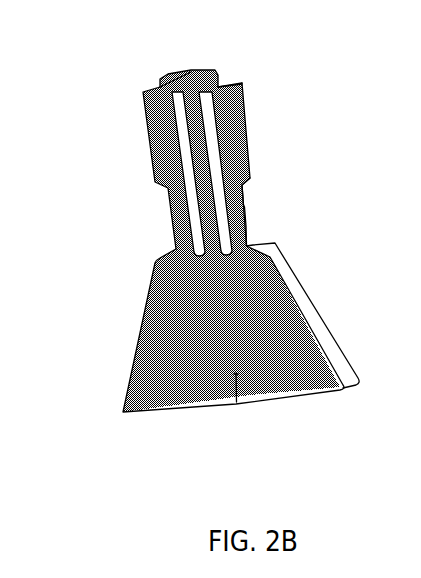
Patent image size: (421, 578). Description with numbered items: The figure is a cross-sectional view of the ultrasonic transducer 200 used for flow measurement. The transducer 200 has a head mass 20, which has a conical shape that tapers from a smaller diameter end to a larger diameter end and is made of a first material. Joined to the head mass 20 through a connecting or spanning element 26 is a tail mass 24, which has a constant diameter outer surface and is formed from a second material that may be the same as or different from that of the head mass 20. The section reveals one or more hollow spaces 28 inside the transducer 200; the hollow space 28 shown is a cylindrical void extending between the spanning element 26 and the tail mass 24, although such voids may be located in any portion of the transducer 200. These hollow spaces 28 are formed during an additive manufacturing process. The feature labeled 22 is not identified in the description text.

The ultrasonic transducer 200 is at (198, 215).
The head mass 20 is at (138, 345).
The side latch steps 22 is at (246, 214).
The tail mass 24 is at (153, 147).
The connecting element 26 is at (190, 71).
The hollow space 28 is at (212, 145).